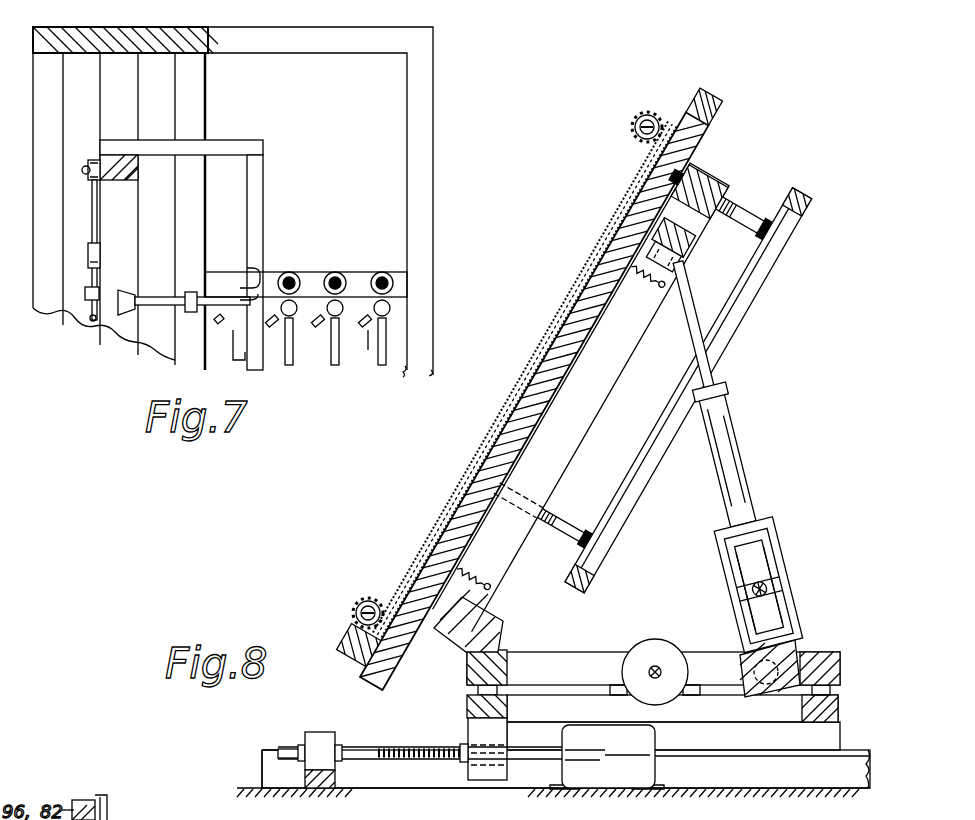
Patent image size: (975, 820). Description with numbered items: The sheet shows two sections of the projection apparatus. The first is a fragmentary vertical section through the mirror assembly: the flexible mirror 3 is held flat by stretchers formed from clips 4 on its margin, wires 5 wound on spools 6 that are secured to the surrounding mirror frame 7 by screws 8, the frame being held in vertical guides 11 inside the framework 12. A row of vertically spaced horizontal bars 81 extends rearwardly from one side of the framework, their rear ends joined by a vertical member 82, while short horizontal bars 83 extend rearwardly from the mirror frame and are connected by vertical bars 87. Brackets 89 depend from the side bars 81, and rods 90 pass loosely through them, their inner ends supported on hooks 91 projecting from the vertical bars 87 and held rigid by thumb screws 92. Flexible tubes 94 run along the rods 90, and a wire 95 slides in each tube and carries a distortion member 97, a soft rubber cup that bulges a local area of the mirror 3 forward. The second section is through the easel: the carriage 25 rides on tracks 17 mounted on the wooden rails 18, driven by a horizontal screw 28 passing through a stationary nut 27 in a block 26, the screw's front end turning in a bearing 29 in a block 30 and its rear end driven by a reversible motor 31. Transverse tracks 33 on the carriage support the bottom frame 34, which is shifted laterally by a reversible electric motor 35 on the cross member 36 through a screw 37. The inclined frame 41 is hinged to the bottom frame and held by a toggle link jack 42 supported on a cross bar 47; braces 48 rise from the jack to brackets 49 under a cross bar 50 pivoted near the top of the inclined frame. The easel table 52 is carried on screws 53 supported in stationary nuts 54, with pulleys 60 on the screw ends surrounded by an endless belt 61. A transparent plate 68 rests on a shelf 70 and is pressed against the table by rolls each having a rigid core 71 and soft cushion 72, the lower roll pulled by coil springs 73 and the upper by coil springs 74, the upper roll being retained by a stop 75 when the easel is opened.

In FIG. 7, the flexible mirror 3 is at (71, 317).
In FIG. 7, the clips 4 is at (88, 258).
In FIG. 7, the wires 5 is at (92, 213).
In FIG. 7, the spools 6 is at (92, 159).
In FIG. 7, the mirror frame 7 is at (135, 174).
In FIG. 7, the screws 8 is at (82, 170).
In FIG. 7, the vertical guides 11 is at (138, 98).
In FIG. 7, the framework 12 is at (192, 53).
In FIG. 8, the tracks 17 is at (262, 750).
In FIG. 8, the wooden rails 18 is at (752, 780).
In FIG. 8, the carriage 25 is at (467, 705).
In FIG. 8, the block 26 is at (468, 774).
In FIG. 8, the stationary nut 27 is at (460, 745).
In FIG. 8, the horizontal screw 28 is at (358, 747).
In FIG. 8, the bearing 29 is at (300, 735).
In FIG. 8, the block 30 is at (320, 735).
In FIG. 8, the reversible motor 31 is at (658, 763).
In FIG. 8, the tracks 33 is at (838, 704).
In FIG. 8, the bottom frame 34 is at (813, 652).
In FIG. 8, the reversible electric motor 35 is at (659, 644).
In FIG. 8, the cross member 36 is at (568, 694).
In FIG. 8, the screw 37 is at (652, 669).
In FIG. 8, the inclined frame 41 is at (502, 573).
In FIG. 8, the toggle link jack 42 is at (769, 568).
In FIG. 8, the cross bar 47 is at (730, 655).
In FIG. 8, the braces 48 is at (738, 473).
In FIG. 8, the brackets 49 is at (687, 262).
In FIG. 8, the cross bar 50 is at (690, 234).
In FIG. 8, the easel table 52 is at (683, 174).
In FIG. 8, the screws 53 is at (733, 205).
In FIG. 8, the stationary nuts 54 is at (723, 172).
In FIG. 8, the pulleys 60 is at (783, 246).
In FIG. 8, the endless belt 61 is at (725, 340).
In FIG. 8, the transparent plate 68 is at (602, 260).
In FIG. 8, the shelf 70 is at (352, 637).
In FIG. 8, the rigid core 71 is at (365, 606).
In FIG. 8, the soft cushion 72 is at (355, 605).
In FIG. 8, the coil springs 73 is at (351, 613).
In FIG. 8, the coil springs 74 is at (644, 138).
In FIG. 8, the stop 75 is at (712, 115).
In FIG. 7, the horizontal bars 81 is at (360, 272).
In FIG. 7, the vertical member 82 is at (433, 195).
In FIG. 7, the horizontal bars 83 is at (208, 148).
In FIG. 7, the vertical bars 87 is at (263, 213).
In FIG. 7, the brackets 89 is at (299, 327).
In FIG. 7, the rods 90 is at (195, 310).
In FIG. 7, the hooks 91 is at (234, 354).
In FIG. 7, the thumb screws 92 is at (366, 330).
In FIG. 7, the flexible tubes 94 is at (230, 292).
In FIG. 7, the wire 95 is at (140, 294).
In FIG. 7, the distortion member 97 is at (96, 324).